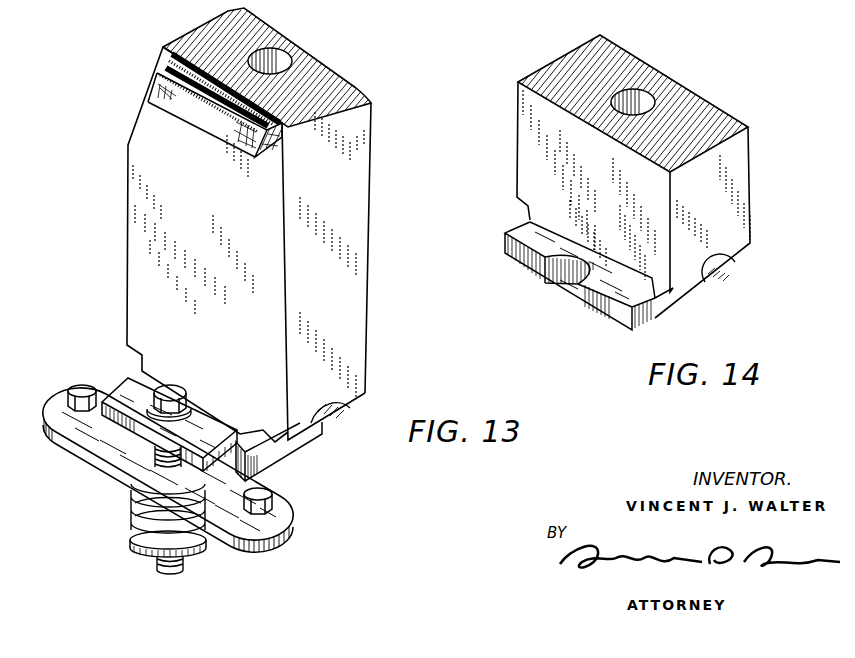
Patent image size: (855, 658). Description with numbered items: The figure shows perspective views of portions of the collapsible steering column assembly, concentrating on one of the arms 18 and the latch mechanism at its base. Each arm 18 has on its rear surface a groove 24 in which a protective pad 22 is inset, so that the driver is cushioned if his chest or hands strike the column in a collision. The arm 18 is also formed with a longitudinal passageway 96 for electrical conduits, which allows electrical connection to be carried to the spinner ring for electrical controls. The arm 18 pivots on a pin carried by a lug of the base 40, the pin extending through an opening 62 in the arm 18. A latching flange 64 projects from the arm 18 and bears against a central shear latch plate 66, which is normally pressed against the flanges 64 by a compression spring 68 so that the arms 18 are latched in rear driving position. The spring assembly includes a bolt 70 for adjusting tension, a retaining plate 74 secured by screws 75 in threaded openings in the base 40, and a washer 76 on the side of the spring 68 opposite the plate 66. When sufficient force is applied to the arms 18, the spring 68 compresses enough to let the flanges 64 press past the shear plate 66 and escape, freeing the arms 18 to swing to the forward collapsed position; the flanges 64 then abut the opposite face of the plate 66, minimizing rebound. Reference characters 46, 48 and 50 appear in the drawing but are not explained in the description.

In FIG. 13, the arms 18 is at (345, 203).
In FIG. 14, the arms 18 is at (708, 184).
In FIG. 13, the pads 22 is at (222, 131).
In FIG. 13, the grooves 24 is at (208, 78).
In FIG. 13, the base 40 is at (286, 7).
In FIG. 13, the ridge 46 is at (394, 7).
In FIG. 13, the ridge 48 is at (354, 7).
In FIG. 13, the ridge 50 is at (427, 7).
In FIG. 13, the openings 62 is at (346, 414).
In FIG. 14, the openings 62 is at (717, 270).
In FIG. 13, the latching flange 64 is at (252, 467).
In FIG. 14, the latching flange 64 is at (617, 312).
In FIG. 13, the central shear latch plate 66 is at (127, 388).
In FIG. 13, the compression spring 68 is at (146, 522).
In FIG. 13, the bolt 70 is at (172, 392).
In FIG. 13, the retaining plate 74 is at (277, 518).
In FIG. 13, the screws 75 is at (76, 387).
In FIG. 13, the washer 76 is at (205, 548).
In FIG. 13, the longitudinal passageways 96 is at (276, 63).
In FIG. 14, the longitudinal passageways 96 is at (642, 102).